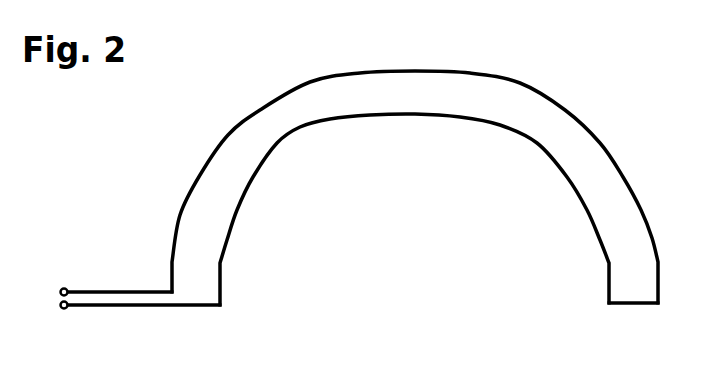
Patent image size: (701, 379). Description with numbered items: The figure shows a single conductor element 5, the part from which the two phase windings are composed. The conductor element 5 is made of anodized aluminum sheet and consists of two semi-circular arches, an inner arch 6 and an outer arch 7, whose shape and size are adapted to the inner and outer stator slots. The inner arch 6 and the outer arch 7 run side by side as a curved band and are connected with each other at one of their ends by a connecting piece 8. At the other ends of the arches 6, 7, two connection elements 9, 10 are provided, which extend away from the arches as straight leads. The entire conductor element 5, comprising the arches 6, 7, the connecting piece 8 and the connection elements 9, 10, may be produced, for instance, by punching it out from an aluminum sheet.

The conductor element 5 is at (168, 152).
The inner arch 6 is at (320, 133).
The outer arch 7 is at (340, 72).
The connecting piece 8 is at (632, 307).
The connection element 9 is at (112, 308).
The connection element 10 is at (136, 291).